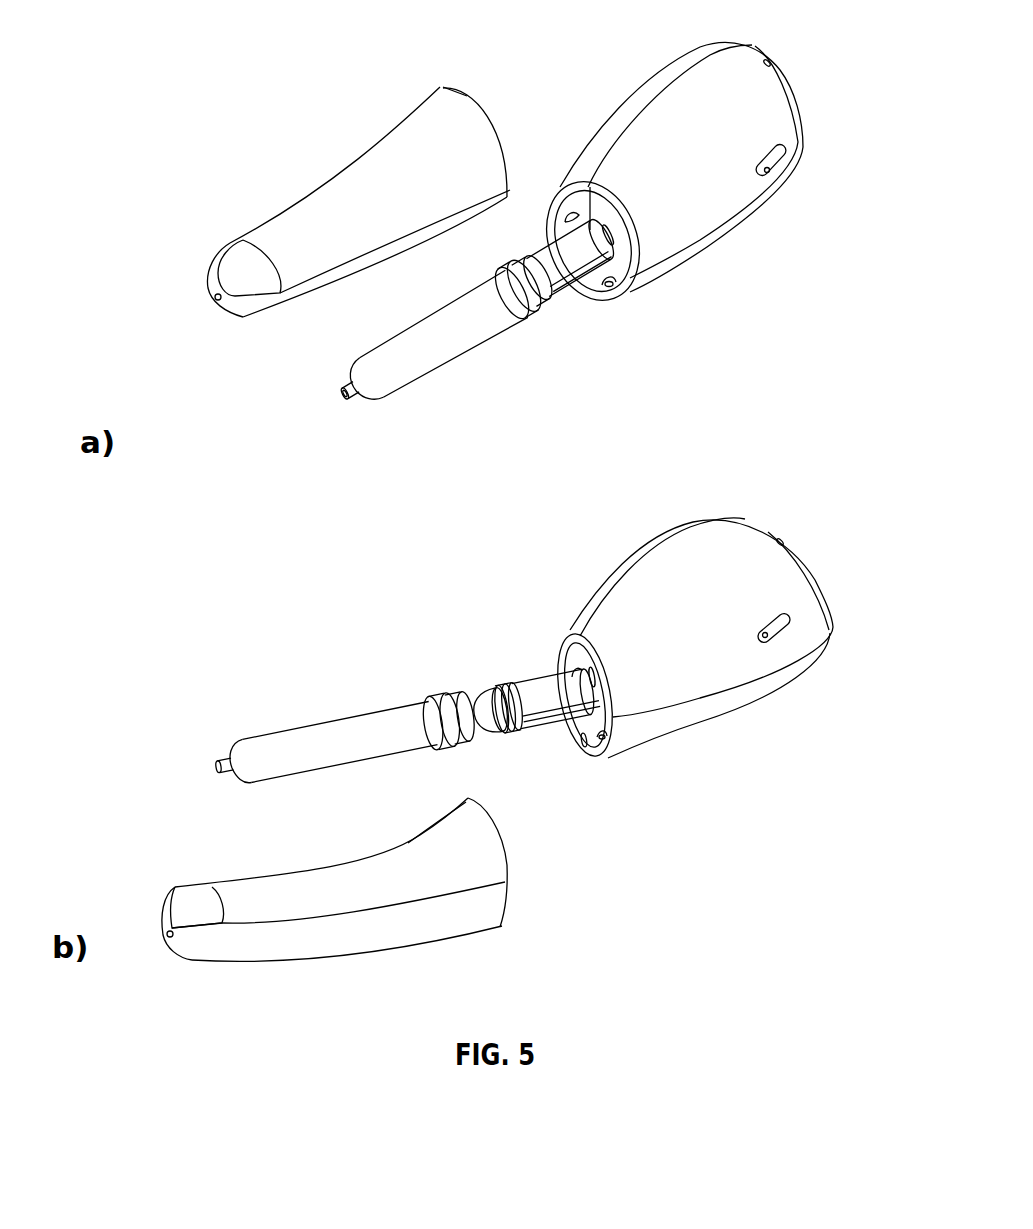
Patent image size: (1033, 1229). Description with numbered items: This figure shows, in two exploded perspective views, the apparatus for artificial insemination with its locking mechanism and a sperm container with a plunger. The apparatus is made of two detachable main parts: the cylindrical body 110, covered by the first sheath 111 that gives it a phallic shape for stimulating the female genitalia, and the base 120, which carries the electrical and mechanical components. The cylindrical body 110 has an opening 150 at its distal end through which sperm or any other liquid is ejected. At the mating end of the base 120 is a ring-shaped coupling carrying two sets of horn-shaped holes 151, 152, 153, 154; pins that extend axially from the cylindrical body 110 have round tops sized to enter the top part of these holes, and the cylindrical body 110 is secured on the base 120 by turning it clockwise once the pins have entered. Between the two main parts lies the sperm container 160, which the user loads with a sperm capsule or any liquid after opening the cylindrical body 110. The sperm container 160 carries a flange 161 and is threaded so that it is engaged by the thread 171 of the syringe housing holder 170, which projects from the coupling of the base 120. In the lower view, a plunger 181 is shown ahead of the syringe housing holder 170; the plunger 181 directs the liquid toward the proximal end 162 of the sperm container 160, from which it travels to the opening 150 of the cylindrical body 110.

The cylindrical body 110 is at (230, 184).
The first sheath 111 is at (442, 86).
The base 120 is at (612, 86).
The opening 150 is at (217, 300).
The horn-shaped hole 151 is at (612, 229).
The horn-shaped hole 152 is at (568, 217).
The horn-shaped hole 153 is at (613, 286).
The horn-shaped hole 154 is at (587, 740).
The sperm container 160 is at (438, 345).
The cartridge flange 161 is at (520, 268).
The proximal end 162 is at (350, 388).
The syringe housing holder 170 is at (561, 273).
The thread 171 is at (508, 735).
The plunger 181 is at (493, 725).